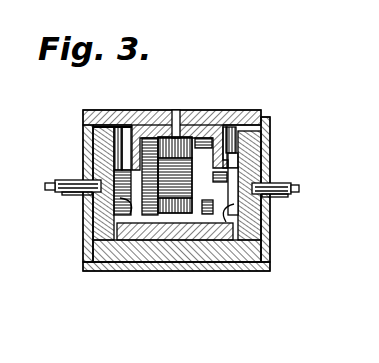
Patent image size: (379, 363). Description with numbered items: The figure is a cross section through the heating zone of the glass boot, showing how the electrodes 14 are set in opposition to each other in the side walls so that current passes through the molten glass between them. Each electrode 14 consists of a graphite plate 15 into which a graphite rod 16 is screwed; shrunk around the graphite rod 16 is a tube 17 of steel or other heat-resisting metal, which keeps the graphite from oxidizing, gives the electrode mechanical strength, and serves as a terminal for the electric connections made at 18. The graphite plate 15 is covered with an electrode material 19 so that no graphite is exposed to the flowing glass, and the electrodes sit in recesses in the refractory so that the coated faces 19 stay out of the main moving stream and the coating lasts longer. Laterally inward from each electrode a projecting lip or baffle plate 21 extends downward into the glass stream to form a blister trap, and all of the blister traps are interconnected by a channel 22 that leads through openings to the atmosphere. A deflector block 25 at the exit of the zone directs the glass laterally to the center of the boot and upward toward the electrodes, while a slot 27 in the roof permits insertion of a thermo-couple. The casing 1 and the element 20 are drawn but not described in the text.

The housing casing 1 is at (167, 270).
The electrode 14 is at (100, 205).
The graphite plate 15 is at (118, 207).
The graphite rod 16 is at (108, 166).
The tube 17 is at (75, 194).
The electric connections 18 is at (55, 180).
The electrode material coating 19 is at (100, 235).
The inner sleeve 20 is at (127, 154).
The baffle plate 21 is at (140, 165).
The channel 22 is at (237, 147).
The deflector block 25 is at (150, 213).
The slot 27 is at (175, 110).